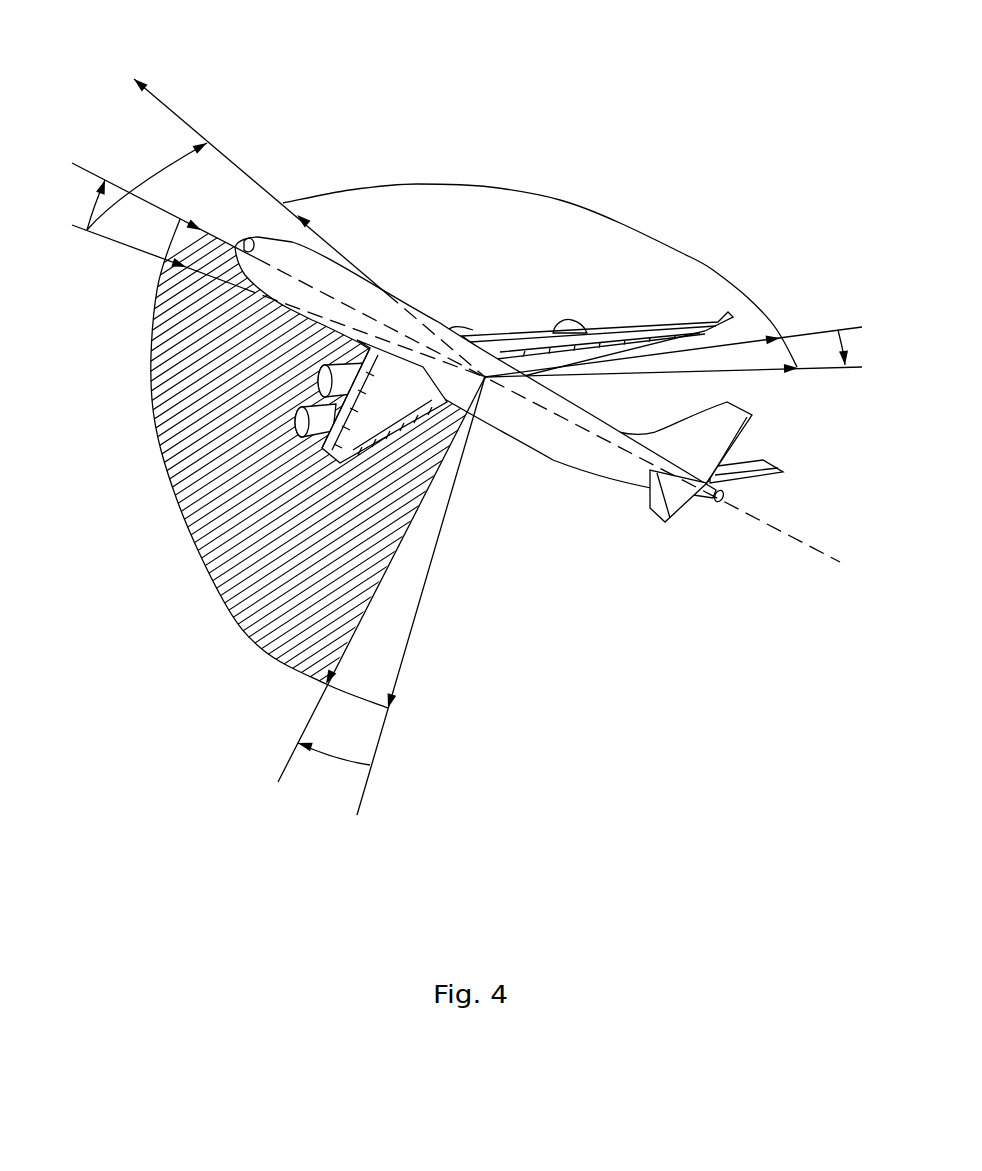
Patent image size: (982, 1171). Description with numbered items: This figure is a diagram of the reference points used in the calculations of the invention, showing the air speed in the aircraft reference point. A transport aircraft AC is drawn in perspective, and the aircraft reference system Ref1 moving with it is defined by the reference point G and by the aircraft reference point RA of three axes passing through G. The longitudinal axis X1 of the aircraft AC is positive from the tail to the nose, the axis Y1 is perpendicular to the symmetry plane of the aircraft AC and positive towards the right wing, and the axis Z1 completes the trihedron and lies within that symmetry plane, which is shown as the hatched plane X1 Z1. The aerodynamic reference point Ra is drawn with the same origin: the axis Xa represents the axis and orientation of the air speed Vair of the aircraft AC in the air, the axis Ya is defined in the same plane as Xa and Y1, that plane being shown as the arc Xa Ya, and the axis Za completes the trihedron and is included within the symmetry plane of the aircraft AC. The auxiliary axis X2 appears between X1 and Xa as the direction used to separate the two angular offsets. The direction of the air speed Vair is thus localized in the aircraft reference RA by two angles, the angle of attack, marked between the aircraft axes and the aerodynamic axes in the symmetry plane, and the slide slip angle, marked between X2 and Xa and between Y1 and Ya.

The aircraft AC is at (553, 460).
The reference point G is at (485, 380).
The longitudinal axis of the aircraft X1 is at (456, 362).
The projection of the longitudinal axis in the aerodynamic plane X2 is at (278, 301).
The air speed axis Xa is at (309, 228).
The axis perpendicular to the symmetry plane of the aircraft Y1 is at (673, 343).
The aerodynamic lateral axis Ya is at (673, 382).
The axis completing the trihedron Z1 is at (381, 579).
The aerodynamic vertical axis Za is at (421, 596).
The plane of Xa and Y1 Xa Ya is at (527, 230).
The symmetry plane of the aircraft X1 Z1 is at (222, 492).
The air speed Vair is at (146, 47).